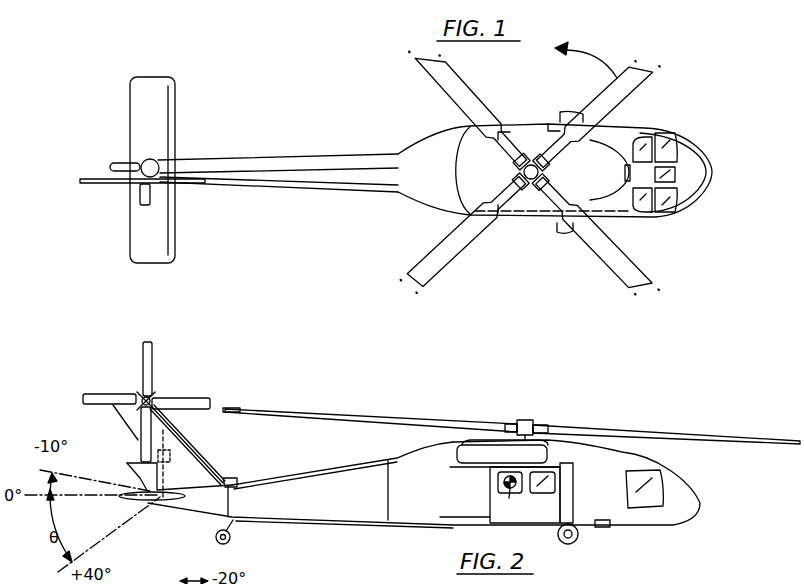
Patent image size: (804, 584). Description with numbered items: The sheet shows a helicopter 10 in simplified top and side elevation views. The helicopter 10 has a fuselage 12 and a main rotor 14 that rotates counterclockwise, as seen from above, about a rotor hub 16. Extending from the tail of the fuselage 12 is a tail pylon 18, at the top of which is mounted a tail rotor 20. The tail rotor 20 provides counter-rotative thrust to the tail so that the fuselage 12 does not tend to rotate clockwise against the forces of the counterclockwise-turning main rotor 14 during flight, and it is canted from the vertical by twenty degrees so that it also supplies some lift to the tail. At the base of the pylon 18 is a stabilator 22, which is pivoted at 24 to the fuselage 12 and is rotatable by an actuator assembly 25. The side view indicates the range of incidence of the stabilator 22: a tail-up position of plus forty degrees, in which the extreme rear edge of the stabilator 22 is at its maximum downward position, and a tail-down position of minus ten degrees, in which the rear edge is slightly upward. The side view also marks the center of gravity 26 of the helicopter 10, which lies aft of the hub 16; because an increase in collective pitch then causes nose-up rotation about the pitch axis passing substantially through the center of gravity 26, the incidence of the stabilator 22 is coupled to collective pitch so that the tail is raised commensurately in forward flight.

In FIG. 1, the helicopter 10 is at (324, 70).
In FIG. 2, the helicopter 10 is at (655, 411).
In FIG. 1, the fuselage 12 is at (428, 143).
In FIG. 2, the fuselage 12 is at (430, 503).
In FIG. 1, the main rotor 14 is at (468, 97).
In FIG. 2, the main rotor 14 is at (511, 426).
In FIG. 1, the rotor hub 16 is at (523, 172).
In FIG. 2, the rotor hub 16 is at (531, 421).
In FIG. 1, the tail pylon 18 is at (131, 164).
In FIG. 2, the tail pylon 18 is at (123, 425).
In FIG. 1, the tail rotor 20 is at (140, 197).
In FIG. 2, the tail rotor 20 is at (188, 403).
In FIG. 1, the stabilator 22 is at (143, 90).
In FIG. 2, the stabilator 22 is at (136, 500).
In FIG. 2, the pivot 24 is at (170, 500).
In FIG. 2, the actuator assembly 25 is at (190, 455).
In FIG. 2, the center of gravity 26 is at (502, 477).